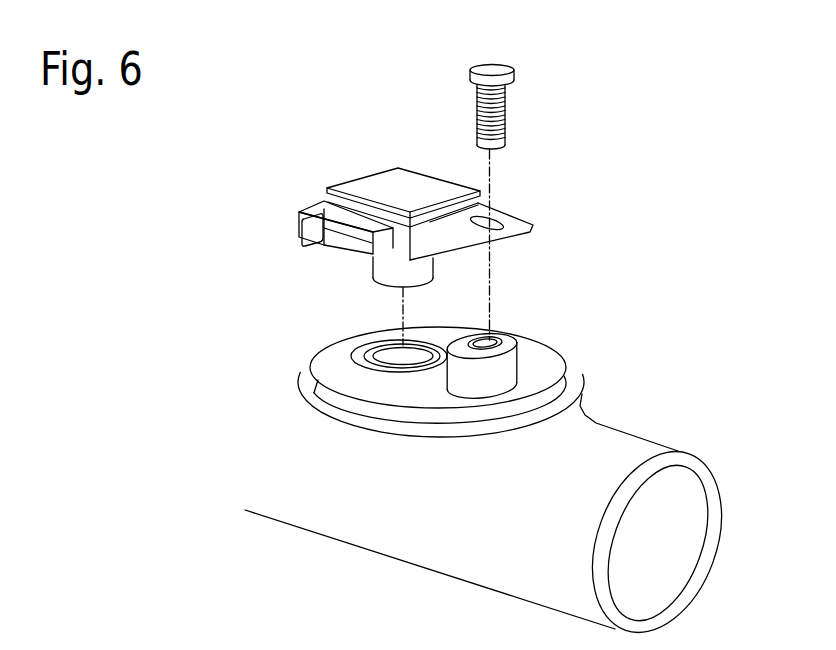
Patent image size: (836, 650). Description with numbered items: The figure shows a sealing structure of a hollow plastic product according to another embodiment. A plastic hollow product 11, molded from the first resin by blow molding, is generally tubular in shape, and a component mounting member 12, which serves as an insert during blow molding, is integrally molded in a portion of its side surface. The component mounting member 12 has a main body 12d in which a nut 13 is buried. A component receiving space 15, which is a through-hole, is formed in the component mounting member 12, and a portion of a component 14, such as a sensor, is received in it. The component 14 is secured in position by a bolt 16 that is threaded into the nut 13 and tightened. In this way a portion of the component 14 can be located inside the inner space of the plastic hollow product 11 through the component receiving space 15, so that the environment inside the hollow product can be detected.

The plastic hollow product 11 is at (605, 443).
The component mounting member 12 is at (423, 377).
The main body 12d is at (407, 392).
The nut 13 is at (490, 343).
The component 14 is at (322, 206).
The component receiving space 15 is at (325, 398).
The bolt 16 is at (497, 72).